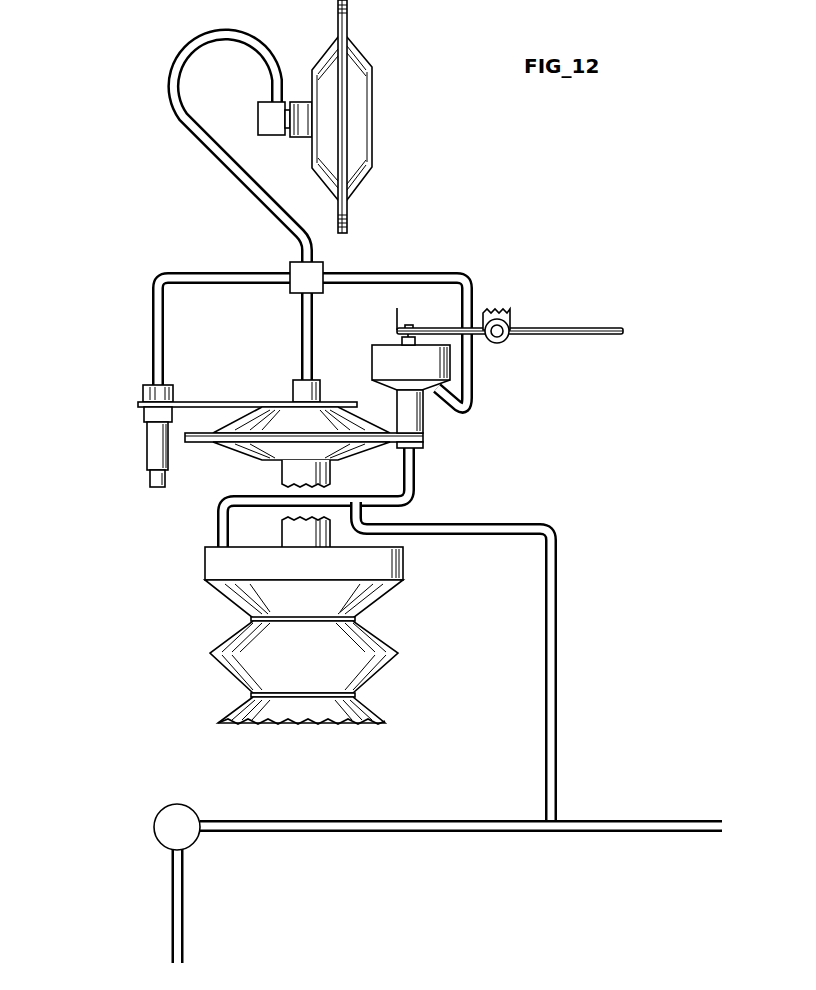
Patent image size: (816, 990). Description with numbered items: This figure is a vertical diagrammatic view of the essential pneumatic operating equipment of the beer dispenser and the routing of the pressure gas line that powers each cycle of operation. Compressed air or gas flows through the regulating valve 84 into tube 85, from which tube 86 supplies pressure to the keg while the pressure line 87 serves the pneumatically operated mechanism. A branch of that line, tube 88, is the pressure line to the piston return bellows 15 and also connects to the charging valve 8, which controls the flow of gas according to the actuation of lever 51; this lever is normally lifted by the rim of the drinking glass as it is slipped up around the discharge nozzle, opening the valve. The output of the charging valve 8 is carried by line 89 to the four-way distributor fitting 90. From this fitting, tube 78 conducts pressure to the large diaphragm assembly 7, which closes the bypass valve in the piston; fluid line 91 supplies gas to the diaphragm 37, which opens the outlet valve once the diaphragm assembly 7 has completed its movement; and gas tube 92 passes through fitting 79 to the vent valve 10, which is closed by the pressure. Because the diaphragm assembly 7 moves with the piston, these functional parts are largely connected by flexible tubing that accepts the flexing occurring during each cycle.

The diaphragm assembly 7 is at (213, 436).
The charging valve 8 is at (400, 342).
The vent valve 10 is at (152, 440).
The piston return bellows 15 is at (308, 669).
The diaphragm 37 is at (343, 117).
The lever 51 is at (565, 335).
The tube 78 is at (305, 358).
The fitting 79 is at (147, 388).
The regulating valve 84 is at (162, 817).
The tube 85 is at (422, 825).
The tube 86 is at (647, 823).
The pressure line 87 is at (550, 633).
The tube 88 is at (222, 513).
The line 89 is at (445, 277).
The four-way distributor fitting 90 is at (313, 270).
The fluid line 91 is at (183, 118).
The gas tube 92 is at (230, 278).